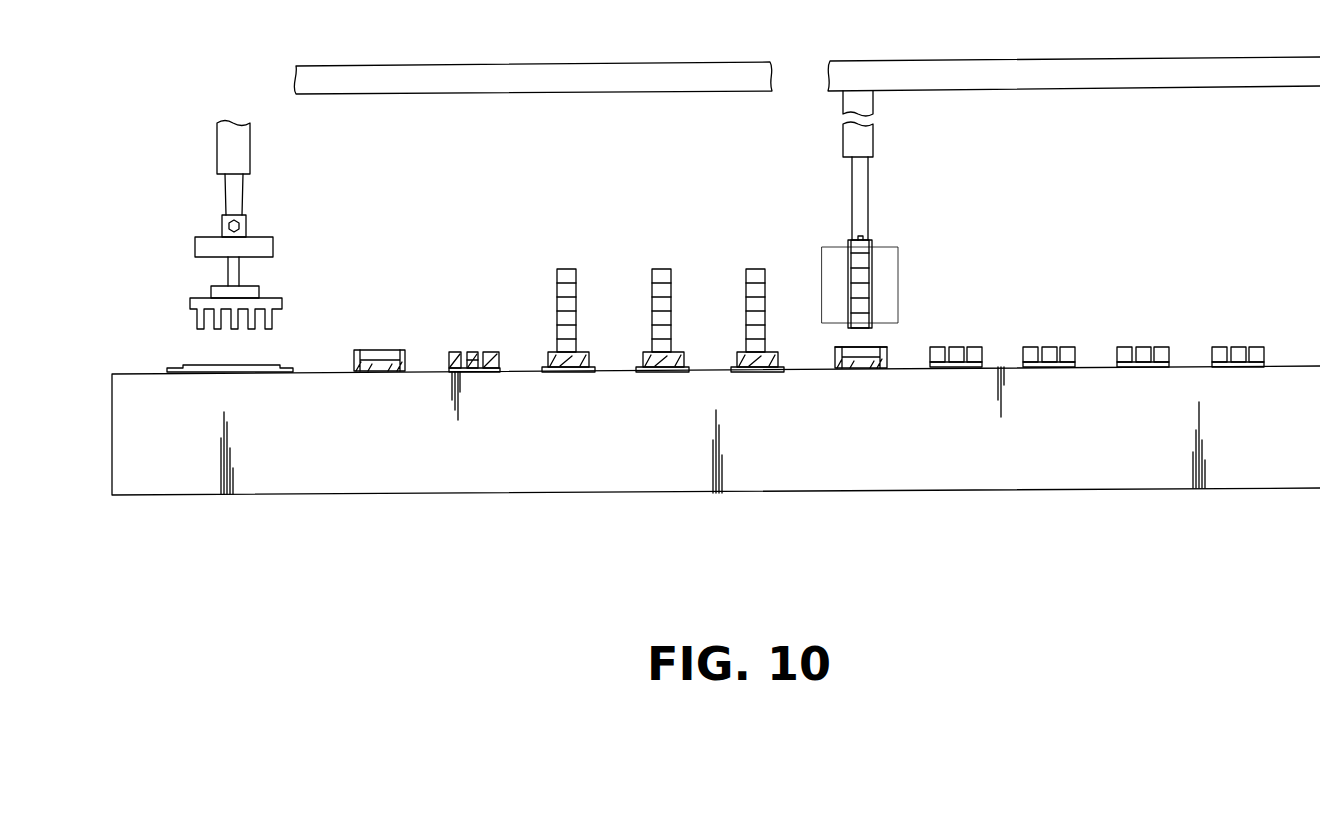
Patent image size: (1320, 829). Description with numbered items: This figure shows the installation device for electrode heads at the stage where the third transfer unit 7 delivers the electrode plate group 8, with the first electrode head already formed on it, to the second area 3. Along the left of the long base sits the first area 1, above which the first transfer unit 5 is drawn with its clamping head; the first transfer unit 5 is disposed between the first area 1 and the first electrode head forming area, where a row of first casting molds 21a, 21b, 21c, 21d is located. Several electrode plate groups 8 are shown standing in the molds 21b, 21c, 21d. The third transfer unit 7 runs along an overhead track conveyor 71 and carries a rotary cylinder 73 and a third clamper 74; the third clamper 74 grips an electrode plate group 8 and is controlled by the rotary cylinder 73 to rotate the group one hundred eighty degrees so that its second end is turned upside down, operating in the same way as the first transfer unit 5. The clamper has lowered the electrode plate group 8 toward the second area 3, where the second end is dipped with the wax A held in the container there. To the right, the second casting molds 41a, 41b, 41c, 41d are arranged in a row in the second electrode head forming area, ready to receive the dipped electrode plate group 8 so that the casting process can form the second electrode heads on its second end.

The first area 1 is at (381, 374).
The second area 3 is at (871, 371).
The first transfer unit 5 is at (180, 216).
The third transfer unit 7 is at (879, 158).
The electrode plate group 8 is at (567, 268).
The first casting mold 21a is at (487, 354).
The first casting mold 21b is at (585, 353).
The first casting mold 21c is at (678, 353).
The first casting mold 21d is at (773, 353).
The second casting mold 41a is at (974, 353).
The second casting mold 41b is at (1068, 351).
The second casting mold 41c is at (1163, 351).
The second casting mold 41d is at (1258, 351).
The track conveyor 71 is at (942, 72).
The rotary cylinder 73 is at (862, 205).
The third clamper 74 is at (869, 250).
The wax A is at (876, 352).